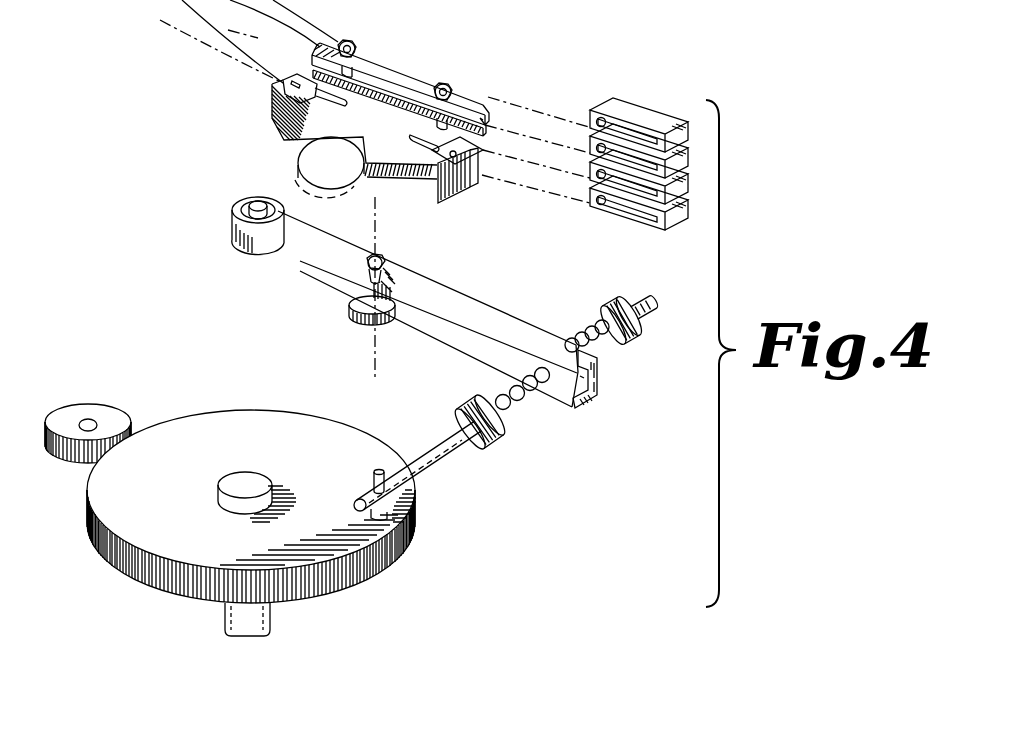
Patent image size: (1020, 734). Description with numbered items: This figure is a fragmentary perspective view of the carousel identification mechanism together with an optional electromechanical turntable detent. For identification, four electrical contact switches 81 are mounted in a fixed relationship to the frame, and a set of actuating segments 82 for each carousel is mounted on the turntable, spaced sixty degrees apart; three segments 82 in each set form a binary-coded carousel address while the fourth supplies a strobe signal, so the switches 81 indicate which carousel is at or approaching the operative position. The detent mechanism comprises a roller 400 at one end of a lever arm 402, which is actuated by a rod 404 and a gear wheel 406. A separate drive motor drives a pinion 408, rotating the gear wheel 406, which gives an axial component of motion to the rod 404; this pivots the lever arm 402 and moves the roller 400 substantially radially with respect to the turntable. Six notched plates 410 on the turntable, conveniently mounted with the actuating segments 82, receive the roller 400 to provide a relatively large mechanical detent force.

The electrical contact switches 81 is at (641, 104).
The actuating segments 82 is at (446, 75).
The roller 400 is at (236, 230).
The lever arm 402 is at (457, 300).
The rod 404 is at (399, 464).
The gear wheel 406 is at (257, 411).
The pinion 408 is at (120, 413).
The notched plates 410 is at (397, 172).